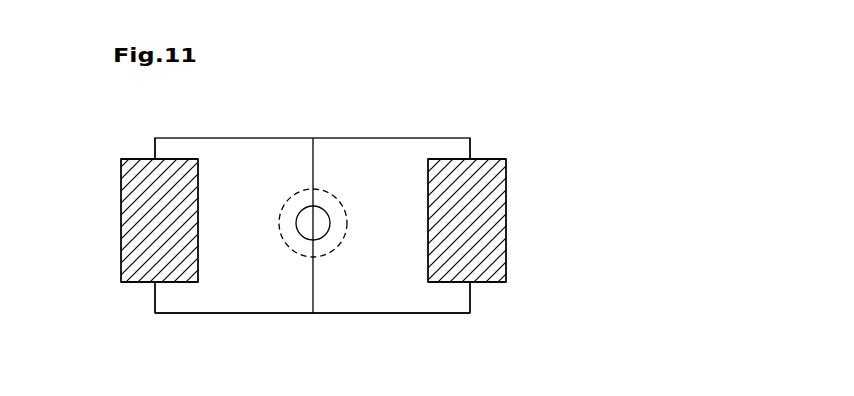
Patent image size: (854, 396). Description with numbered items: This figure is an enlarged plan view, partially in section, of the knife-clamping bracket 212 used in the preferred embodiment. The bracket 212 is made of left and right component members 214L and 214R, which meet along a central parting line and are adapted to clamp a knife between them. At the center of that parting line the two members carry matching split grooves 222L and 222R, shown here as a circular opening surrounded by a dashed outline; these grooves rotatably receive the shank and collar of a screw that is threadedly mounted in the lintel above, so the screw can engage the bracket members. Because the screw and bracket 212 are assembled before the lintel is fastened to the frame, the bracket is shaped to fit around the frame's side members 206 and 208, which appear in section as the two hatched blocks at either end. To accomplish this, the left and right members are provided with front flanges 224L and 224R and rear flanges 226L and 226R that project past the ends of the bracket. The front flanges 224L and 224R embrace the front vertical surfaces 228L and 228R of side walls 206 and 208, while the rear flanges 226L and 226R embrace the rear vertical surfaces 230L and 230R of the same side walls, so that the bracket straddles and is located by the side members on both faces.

The knife-clamping bracket 212 is at (342, 122).
The left component member 214L is at (265, 302).
The right component member 214R is at (343, 302).
The left split groove 222L is at (302, 237).
The right split groove 222R is at (331, 221).
The left side member 206 is at (120, 243).
The right side member 208 is at (507, 238).
The left rear flange 226L is at (155, 151).
The right rear flange 226R is at (470, 141).
The rear vertical surface of left side wall 230L is at (140, 159).
The rear vertical surface of right side wall 230R is at (493, 158).
The front vertical surface of left side wall 228L is at (145, 283).
The front vertical surface of right side wall 228R is at (483, 283).
The left front flange 224L is at (155, 308).
The right front flange 224R is at (470, 302).